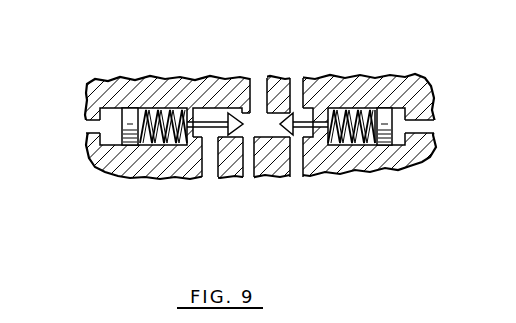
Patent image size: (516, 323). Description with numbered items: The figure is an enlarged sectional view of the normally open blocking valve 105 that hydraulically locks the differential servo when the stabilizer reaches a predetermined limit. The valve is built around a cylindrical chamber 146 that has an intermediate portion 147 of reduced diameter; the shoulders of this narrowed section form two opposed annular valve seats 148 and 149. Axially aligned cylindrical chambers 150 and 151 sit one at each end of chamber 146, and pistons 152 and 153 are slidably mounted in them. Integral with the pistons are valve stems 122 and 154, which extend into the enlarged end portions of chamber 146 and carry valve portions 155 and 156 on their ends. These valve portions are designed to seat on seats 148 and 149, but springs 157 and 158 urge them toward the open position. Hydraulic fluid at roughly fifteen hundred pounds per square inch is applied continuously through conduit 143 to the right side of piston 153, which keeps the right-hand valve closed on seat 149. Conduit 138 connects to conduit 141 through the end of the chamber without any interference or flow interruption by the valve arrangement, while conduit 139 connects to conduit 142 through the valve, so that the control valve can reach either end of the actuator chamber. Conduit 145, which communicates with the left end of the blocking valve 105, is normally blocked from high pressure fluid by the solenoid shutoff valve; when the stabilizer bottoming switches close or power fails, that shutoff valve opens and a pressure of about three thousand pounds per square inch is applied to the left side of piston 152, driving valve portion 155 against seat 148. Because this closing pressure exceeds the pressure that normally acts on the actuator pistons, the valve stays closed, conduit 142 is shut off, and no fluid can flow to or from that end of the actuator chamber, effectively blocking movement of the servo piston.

The blocking valve 105 is at (120, 205).
The valve stem 122 is at (202, 143).
The conduit 138 is at (299, 180).
The conduit 139 is at (205, 178).
The conduit 141 is at (308, 80).
The conduit 142 is at (258, 95).
The conduit 143 is at (434, 124).
The conduit 145 is at (88, 127).
The cylindrical chamber 146 is at (215, 110).
The intermediate portion 147 is at (262, 132).
The valve seat 148 is at (248, 150).
The valve seat 149 is at (295, 145).
The cylindrical chamber 150 is at (112, 138).
The cylindrical chamber 151 is at (398, 135).
The piston 152 is at (130, 112).
The piston 153 is at (386, 113).
The valve stem 154 is at (352, 142).
The valve portion 155 is at (233, 138).
The valve portion 156 is at (299, 105).
The spring 157 is at (165, 110).
The spring 158 is at (371, 112).